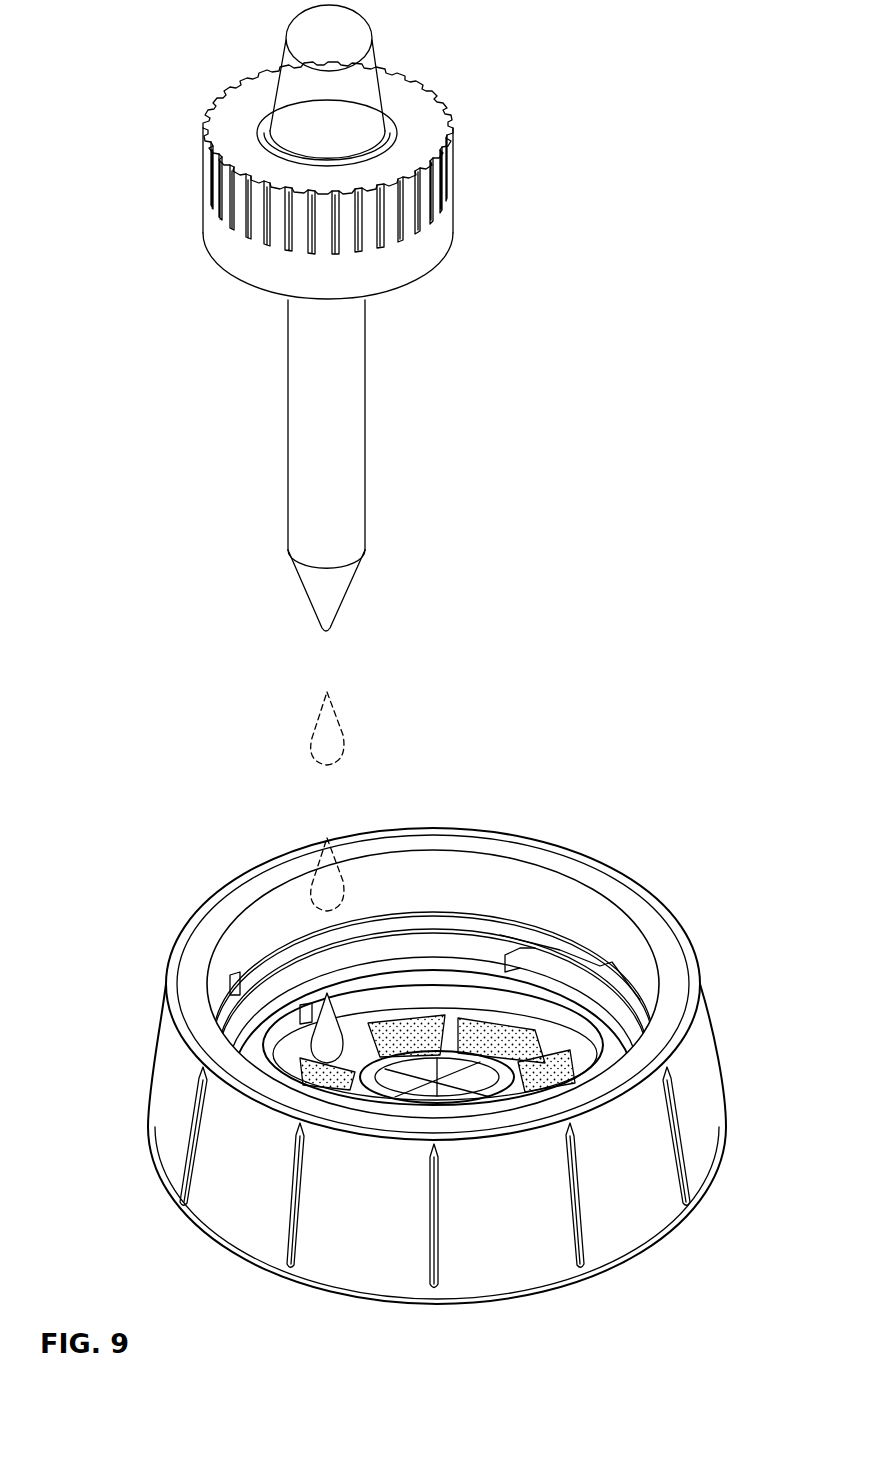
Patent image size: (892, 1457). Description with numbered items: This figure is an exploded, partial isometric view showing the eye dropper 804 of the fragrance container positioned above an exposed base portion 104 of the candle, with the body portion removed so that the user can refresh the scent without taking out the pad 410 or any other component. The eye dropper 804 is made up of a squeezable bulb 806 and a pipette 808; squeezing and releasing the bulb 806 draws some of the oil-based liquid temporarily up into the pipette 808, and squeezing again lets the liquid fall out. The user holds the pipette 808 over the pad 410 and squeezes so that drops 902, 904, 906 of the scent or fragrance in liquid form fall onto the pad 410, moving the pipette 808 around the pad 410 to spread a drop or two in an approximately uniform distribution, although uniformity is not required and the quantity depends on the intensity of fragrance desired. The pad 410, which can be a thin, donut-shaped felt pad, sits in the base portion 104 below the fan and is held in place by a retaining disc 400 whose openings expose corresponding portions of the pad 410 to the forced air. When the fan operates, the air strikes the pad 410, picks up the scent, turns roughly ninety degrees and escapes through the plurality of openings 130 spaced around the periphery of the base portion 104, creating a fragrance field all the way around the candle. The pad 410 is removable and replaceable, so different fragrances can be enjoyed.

The base portion 104 is at (713, 1032).
The openings 130 is at (163, 1197).
The retaining disc 400 is at (497, 1003).
The pad 410 is at (378, 1020).
The eye dropper 804 is at (203, 222).
The squeezable bulb 806 is at (287, 31).
The pipette 808 is at (288, 497).
The drop 902 is at (318, 715).
The drop 904 is at (310, 888).
The drop 906 is at (318, 990).